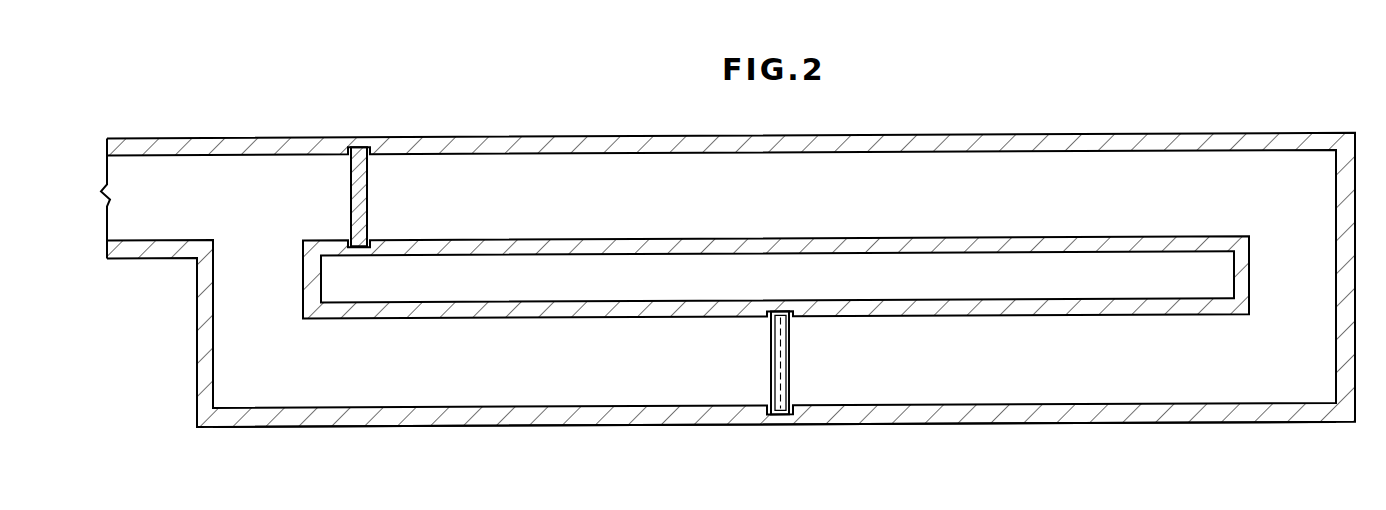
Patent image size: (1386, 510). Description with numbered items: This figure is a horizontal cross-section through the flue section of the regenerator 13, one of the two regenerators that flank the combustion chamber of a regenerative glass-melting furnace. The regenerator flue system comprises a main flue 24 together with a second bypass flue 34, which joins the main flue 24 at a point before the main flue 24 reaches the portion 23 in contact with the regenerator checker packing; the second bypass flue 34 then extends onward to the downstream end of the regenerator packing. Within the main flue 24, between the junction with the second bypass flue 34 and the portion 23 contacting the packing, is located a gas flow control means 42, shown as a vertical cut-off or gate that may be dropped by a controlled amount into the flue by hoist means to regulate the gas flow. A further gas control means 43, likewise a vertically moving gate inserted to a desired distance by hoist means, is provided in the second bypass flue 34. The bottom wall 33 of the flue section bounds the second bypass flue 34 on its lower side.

The regenerator 13 is at (940, 135).
The portion of the main flue in contact with the regenerator packing 23 is at (767, 215).
The main flue 24 is at (178, 207).
The bottom wall 33 is at (512, 427).
The second bypass flue 34 is at (609, 370).
The gas flow control means 42 is at (370, 190).
The gas control means 43 is at (789, 362).